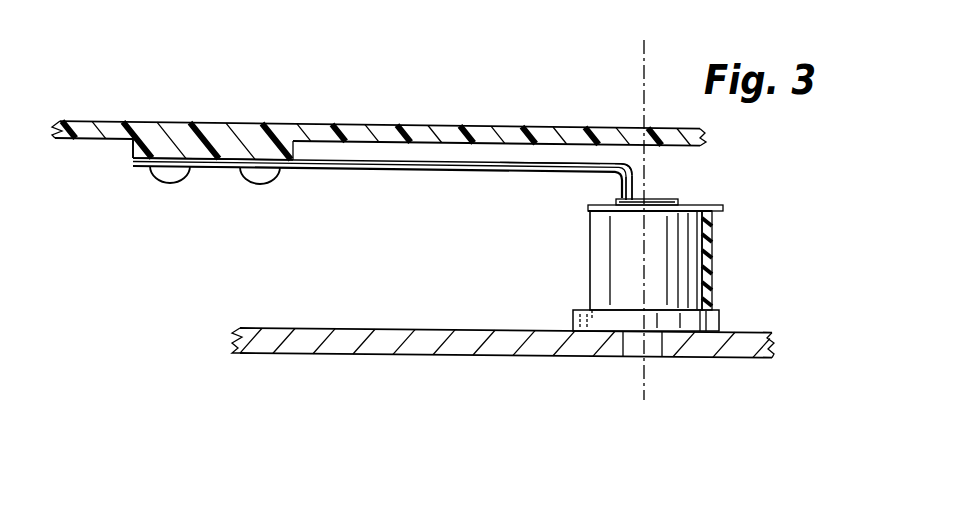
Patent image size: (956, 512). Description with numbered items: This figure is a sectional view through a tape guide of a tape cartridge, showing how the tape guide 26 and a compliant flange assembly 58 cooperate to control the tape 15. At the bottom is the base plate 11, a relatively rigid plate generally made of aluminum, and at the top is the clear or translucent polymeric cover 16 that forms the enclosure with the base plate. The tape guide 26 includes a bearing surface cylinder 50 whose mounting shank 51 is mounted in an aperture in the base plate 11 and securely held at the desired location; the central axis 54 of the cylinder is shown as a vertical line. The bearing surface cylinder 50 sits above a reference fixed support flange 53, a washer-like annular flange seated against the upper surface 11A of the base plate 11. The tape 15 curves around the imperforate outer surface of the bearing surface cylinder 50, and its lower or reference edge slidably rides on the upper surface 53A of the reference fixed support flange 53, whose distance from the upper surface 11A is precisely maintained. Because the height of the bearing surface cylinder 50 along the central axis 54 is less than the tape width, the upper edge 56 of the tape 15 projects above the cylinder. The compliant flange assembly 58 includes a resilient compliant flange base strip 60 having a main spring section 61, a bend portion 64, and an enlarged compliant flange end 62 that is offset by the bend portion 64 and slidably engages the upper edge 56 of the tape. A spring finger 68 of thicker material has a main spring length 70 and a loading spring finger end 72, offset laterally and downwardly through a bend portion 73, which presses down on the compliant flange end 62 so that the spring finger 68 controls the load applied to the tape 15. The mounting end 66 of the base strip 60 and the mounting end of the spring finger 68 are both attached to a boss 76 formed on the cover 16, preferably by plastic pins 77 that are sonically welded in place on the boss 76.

The base plate 11 is at (503, 331).
The upper surface of the base plate 11A is at (355, 328).
The tape 15 is at (710, 268).
The cover 16 is at (385, 124).
The tape guide 26 is at (652, 244).
The bearing surface cylinder 50 is at (603, 242).
The mounting shank 51 is at (652, 352).
The reference fixed support flange 53 is at (573, 318).
The upper surface of the reference fixed support flange 53A is at (582, 310).
The central axis 54 is at (644, 52).
The upper edge of the tape 56 is at (707, 209).
The compliant flange assembly 58 is at (458, 178).
The compliant flange base strip 60 is at (488, 166).
The main spring section 61 is at (430, 167).
The compliant flange end 62 is at (723, 206).
The bend portion 64 is at (619, 183).
The mounting end 66 is at (213, 167).
The spring finger 68 is at (553, 160).
The main spring length 70 is at (482, 162).
The loading spring finger end 72 is at (667, 197).
The bend portion 73 is at (640, 166).
The boss 76 is at (133, 148).
The plastic pins 77 is at (158, 180).